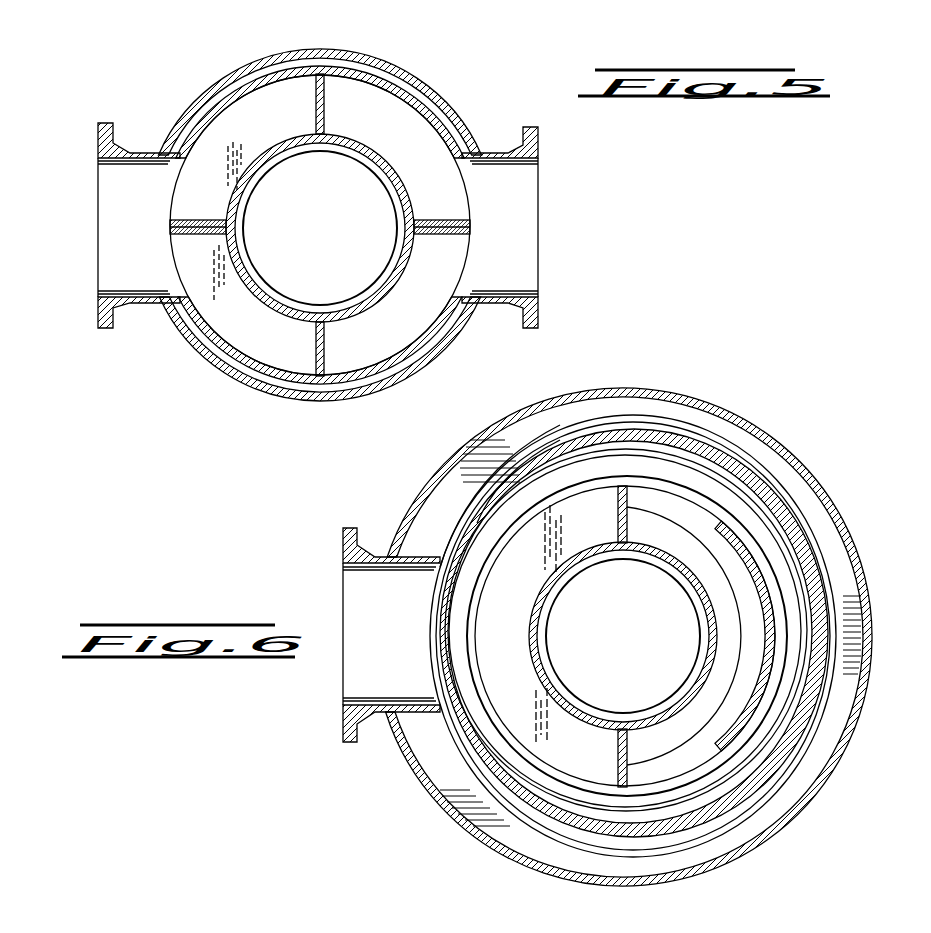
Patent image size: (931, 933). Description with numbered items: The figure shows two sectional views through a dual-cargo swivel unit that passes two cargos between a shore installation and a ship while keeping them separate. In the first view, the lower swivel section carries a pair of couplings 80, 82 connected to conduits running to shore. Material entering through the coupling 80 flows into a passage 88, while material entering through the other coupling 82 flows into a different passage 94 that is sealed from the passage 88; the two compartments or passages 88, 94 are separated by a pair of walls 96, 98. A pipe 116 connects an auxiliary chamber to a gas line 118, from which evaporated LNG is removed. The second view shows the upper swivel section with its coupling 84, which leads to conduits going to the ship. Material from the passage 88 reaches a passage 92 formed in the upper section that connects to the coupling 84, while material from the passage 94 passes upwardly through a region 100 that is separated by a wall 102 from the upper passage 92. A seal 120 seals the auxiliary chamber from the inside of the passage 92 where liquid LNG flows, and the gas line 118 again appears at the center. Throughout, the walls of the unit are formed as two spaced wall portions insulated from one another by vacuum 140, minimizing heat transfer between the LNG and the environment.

In FIG. 5, the coupling 80 is at (100, 196).
In FIG. 5, the coupling 82 is at (538, 212).
In FIG. 6, the coupling 84 is at (345, 540).
In FIG. 5, the passage 88 is at (258, 143).
In FIG. 6, the passage 92 is at (760, 553).
In FIG. 5, the passage 94 is at (400, 143).
In FIG. 5, the wall 96 is at (328, 86).
In FIG. 5, the wall 98 is at (326, 360).
In FIG. 6, the region 100 is at (672, 548).
In FIG. 6, the wall 102 is at (737, 533).
In FIG. 5, the pipe 116 is at (200, 219).
In FIG. 5, the gas line 118 is at (248, 230).
In FIG. 6, the gas line 118 is at (553, 630).
In FIG. 6, the seal 120 is at (437, 686).
In FIG. 5, the vacuum 140 is at (437, 112).
In FIG. 6, the vacuum 140 is at (447, 513).